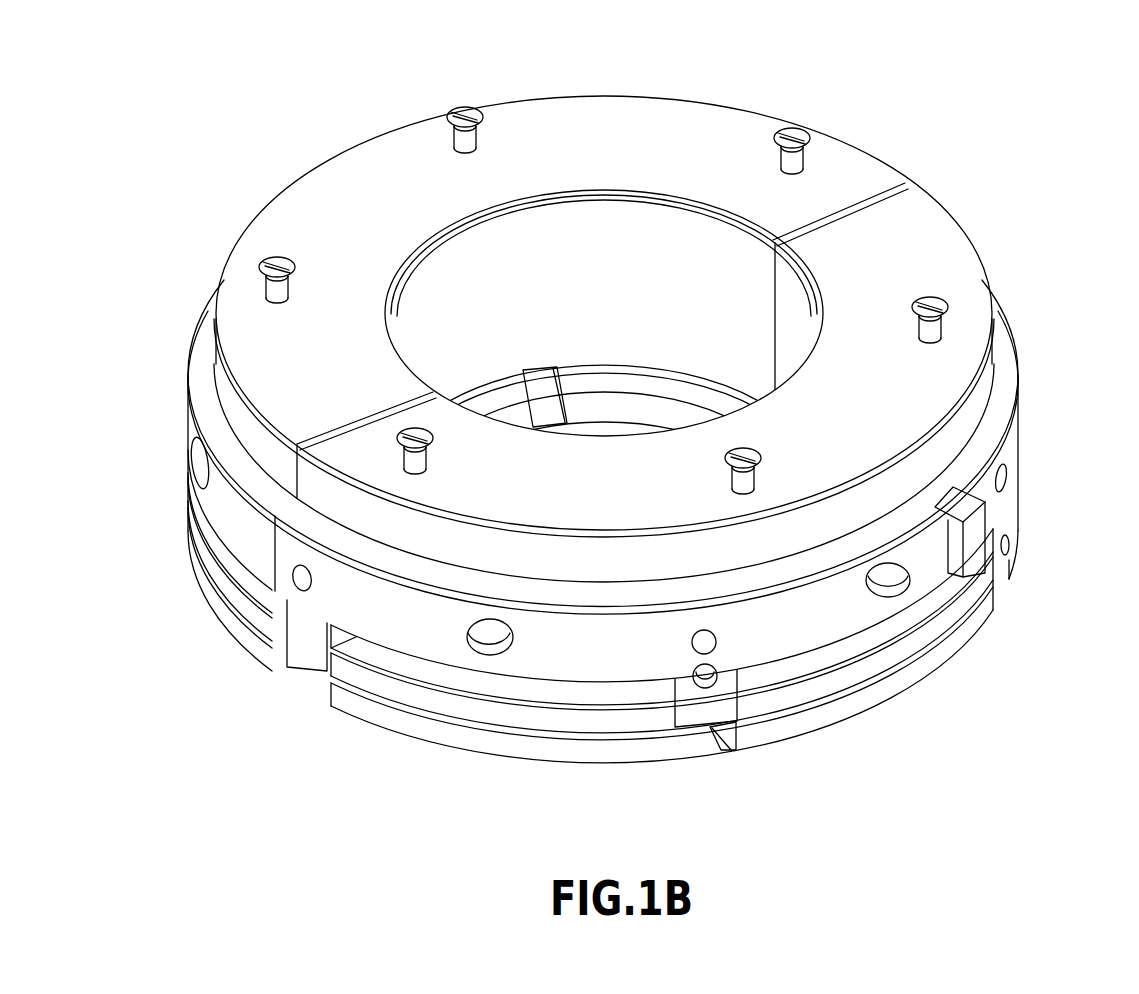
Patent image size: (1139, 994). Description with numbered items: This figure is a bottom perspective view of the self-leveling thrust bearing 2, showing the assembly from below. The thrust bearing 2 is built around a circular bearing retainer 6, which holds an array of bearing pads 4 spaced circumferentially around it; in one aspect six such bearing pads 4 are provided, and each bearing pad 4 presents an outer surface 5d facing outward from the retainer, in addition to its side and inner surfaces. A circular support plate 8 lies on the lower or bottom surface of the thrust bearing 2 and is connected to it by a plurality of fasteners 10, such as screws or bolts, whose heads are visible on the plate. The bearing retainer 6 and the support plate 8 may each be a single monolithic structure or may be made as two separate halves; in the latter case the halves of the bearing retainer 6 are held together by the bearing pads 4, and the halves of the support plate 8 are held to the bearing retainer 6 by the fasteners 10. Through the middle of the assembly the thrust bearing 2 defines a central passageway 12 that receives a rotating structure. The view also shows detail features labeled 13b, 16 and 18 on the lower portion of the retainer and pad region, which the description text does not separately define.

The self-leveling thrust bearing 2 is at (1068, 130).
The bearing pad 4 is at (470, 747).
The outer surface 5d is at (396, 722).
The bearing retainer 6 is at (590, 672).
The support plate 8 is at (931, 244).
The fasteners 10 is at (792, 130).
The central passageway 12 is at (611, 235).
The tab 13b is at (327, 603).
The key tab 16 is at (702, 747).
The upper ring 18 is at (352, 640).